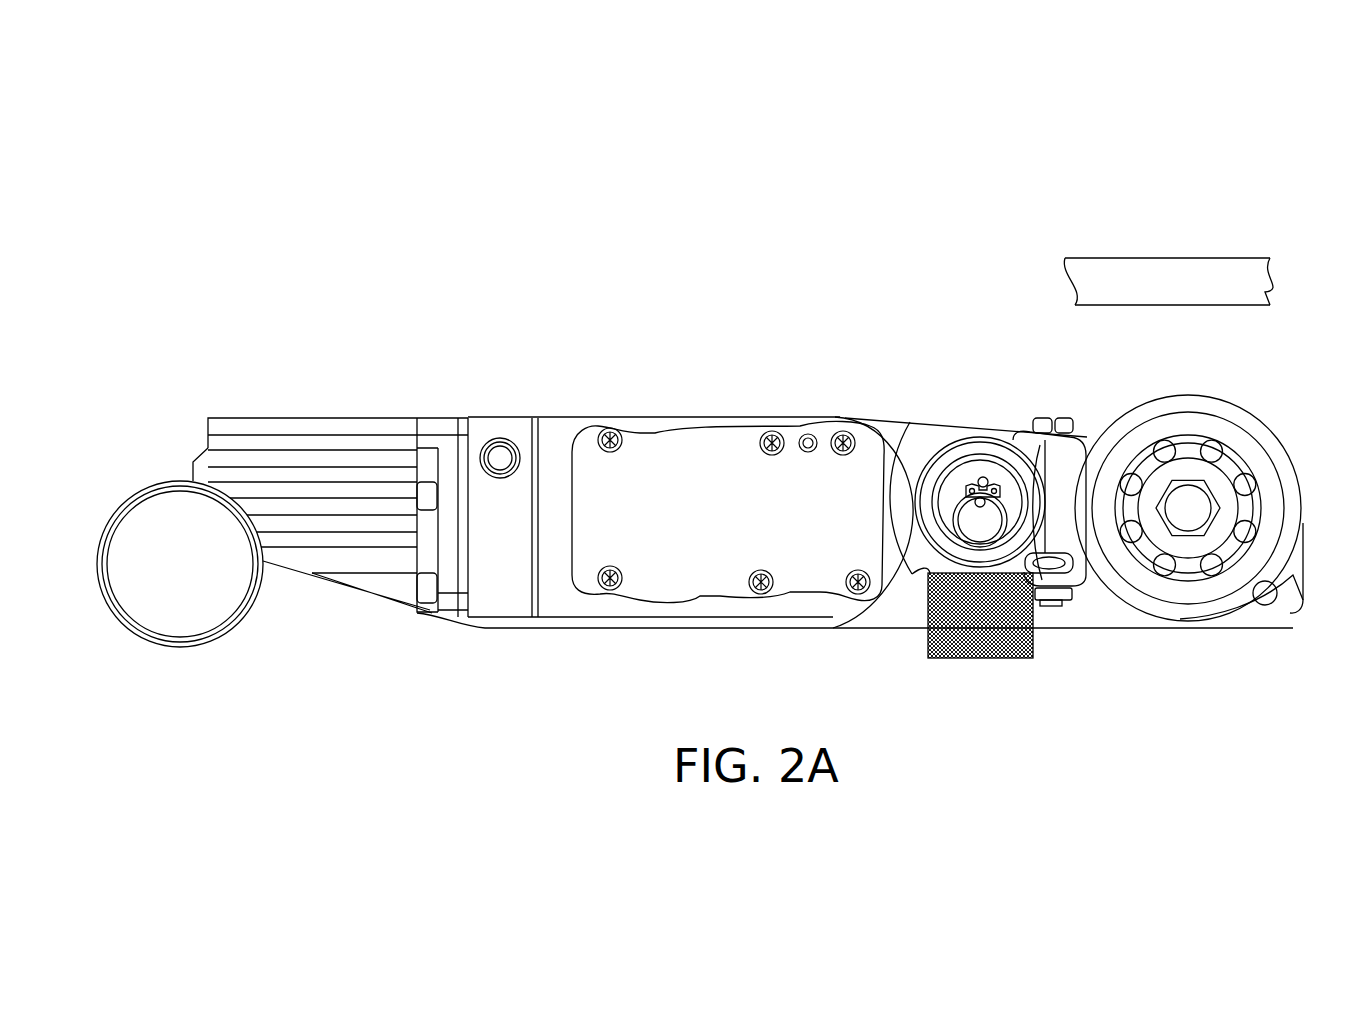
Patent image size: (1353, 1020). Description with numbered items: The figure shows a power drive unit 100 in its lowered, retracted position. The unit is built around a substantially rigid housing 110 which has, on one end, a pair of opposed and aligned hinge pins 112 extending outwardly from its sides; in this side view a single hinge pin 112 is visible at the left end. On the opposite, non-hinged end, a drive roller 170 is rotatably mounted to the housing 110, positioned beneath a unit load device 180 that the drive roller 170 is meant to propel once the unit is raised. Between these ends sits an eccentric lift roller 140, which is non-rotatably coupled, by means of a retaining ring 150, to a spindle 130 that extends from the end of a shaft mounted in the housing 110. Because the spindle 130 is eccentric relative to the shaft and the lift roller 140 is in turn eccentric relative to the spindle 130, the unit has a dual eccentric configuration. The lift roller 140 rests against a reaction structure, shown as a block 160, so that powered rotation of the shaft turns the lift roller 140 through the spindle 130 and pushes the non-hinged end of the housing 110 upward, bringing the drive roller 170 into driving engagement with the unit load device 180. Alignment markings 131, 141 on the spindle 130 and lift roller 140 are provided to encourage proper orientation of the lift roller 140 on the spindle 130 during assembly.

The power drive unit 100 is at (414, 162).
The housing 110 is at (578, 412).
The hinge pins 112 is at (500, 457).
The spindle 130 is at (965, 522).
The alignment marking 131 is at (985, 500).
The eccentric lift roller 140 is at (936, 446).
The alignment marking 141 is at (983, 477).
The retaining ring 150 is at (1013, 522).
The block 160 is at (993, 652).
The drive roller 170 is at (1137, 405).
The unit load device 180 is at (1179, 297).